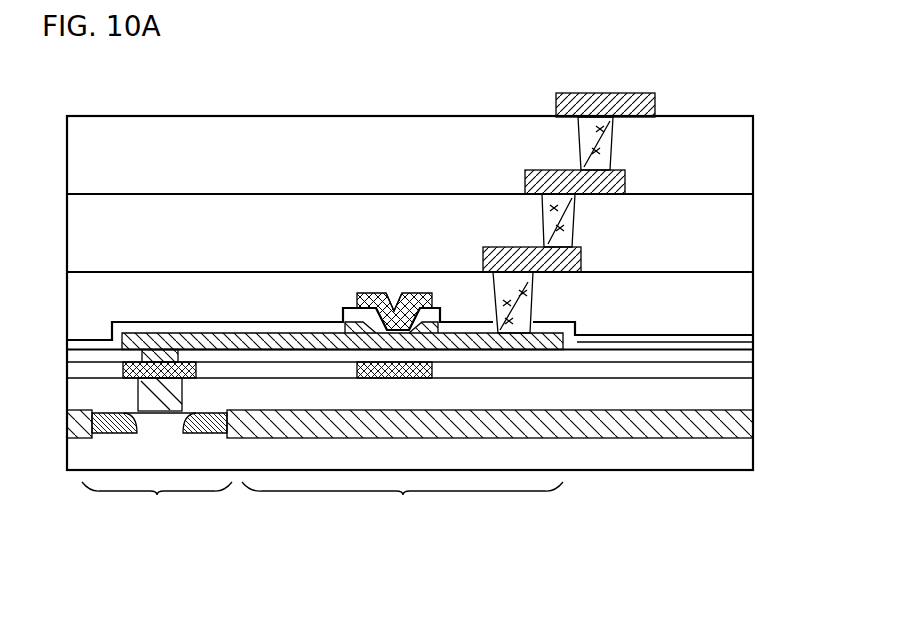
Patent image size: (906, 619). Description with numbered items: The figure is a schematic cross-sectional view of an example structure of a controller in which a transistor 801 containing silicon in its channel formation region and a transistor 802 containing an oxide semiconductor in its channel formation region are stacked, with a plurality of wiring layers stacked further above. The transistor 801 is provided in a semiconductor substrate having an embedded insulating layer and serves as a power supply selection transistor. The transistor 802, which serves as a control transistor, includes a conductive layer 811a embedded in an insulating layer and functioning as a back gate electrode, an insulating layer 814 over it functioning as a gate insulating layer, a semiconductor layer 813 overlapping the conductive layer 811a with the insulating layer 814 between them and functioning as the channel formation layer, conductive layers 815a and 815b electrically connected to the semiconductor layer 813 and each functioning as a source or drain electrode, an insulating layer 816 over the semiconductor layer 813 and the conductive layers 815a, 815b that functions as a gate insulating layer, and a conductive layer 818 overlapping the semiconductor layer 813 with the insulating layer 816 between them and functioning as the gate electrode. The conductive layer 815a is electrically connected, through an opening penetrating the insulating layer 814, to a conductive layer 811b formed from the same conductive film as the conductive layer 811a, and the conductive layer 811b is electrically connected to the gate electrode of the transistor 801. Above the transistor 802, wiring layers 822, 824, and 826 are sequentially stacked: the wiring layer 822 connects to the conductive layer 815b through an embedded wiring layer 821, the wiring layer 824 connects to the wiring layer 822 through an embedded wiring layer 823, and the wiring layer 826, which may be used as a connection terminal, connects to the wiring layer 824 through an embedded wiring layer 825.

The transistor 801 is at (157, 504).
The transistor 802 is at (402, 504).
The conductive layer 811a is at (384, 362).
The conductive layer 811b is at (157, 372).
The semiconductor layer 813 is at (416, 293).
The insulating layer 814 is at (622, 357).
The conductive layer 815a is at (267, 340).
The conductive layer 815b is at (458, 338).
The insulating layer 816 is at (723, 345).
The conductive layer 818 is at (377, 300).
The wiring layer 821 is at (520, 295).
The wiring layer 822 is at (542, 258).
The wiring layer 823 is at (548, 217).
The wiring layer 824 is at (593, 182).
The wiring layer 825 is at (595, 138).
The wiring layer 826 is at (655, 107).